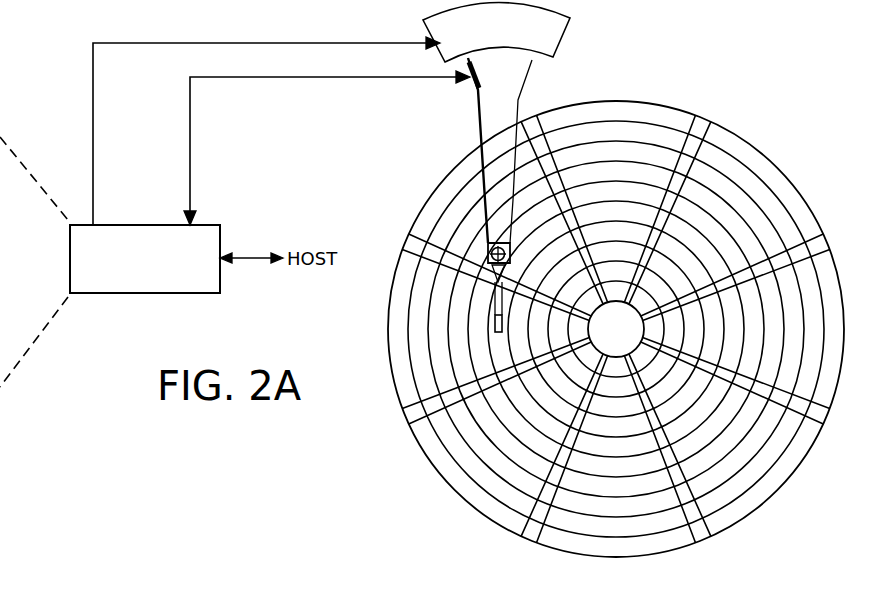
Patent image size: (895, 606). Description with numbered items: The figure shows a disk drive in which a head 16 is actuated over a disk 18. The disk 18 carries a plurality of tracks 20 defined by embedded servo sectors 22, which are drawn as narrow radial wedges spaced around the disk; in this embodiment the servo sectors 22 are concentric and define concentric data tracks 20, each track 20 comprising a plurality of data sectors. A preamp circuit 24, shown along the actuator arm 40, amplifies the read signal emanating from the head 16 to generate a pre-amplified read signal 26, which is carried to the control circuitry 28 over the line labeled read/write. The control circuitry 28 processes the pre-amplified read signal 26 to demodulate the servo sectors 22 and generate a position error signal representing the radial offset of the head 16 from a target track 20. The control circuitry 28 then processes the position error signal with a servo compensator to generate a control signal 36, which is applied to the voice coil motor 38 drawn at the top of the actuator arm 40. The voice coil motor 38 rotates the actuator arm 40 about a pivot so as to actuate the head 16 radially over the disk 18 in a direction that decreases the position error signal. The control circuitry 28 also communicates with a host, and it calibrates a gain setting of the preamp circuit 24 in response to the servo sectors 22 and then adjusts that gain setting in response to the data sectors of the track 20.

The head 16 is at (492, 332).
The disk 18 is at (618, 314).
The tracks 20 is at (628, 128).
The servo sectors 22 is at (531, 122).
The preamp circuit 24 is at (472, 90).
The pre-amplified read signal 26 is at (190, 152).
The control circuitry 28 is at (139, 224).
The control signal 36 is at (92, 109).
The voice coil motor 38 is at (560, 40).
The actuator arm 40 is at (480, 131).